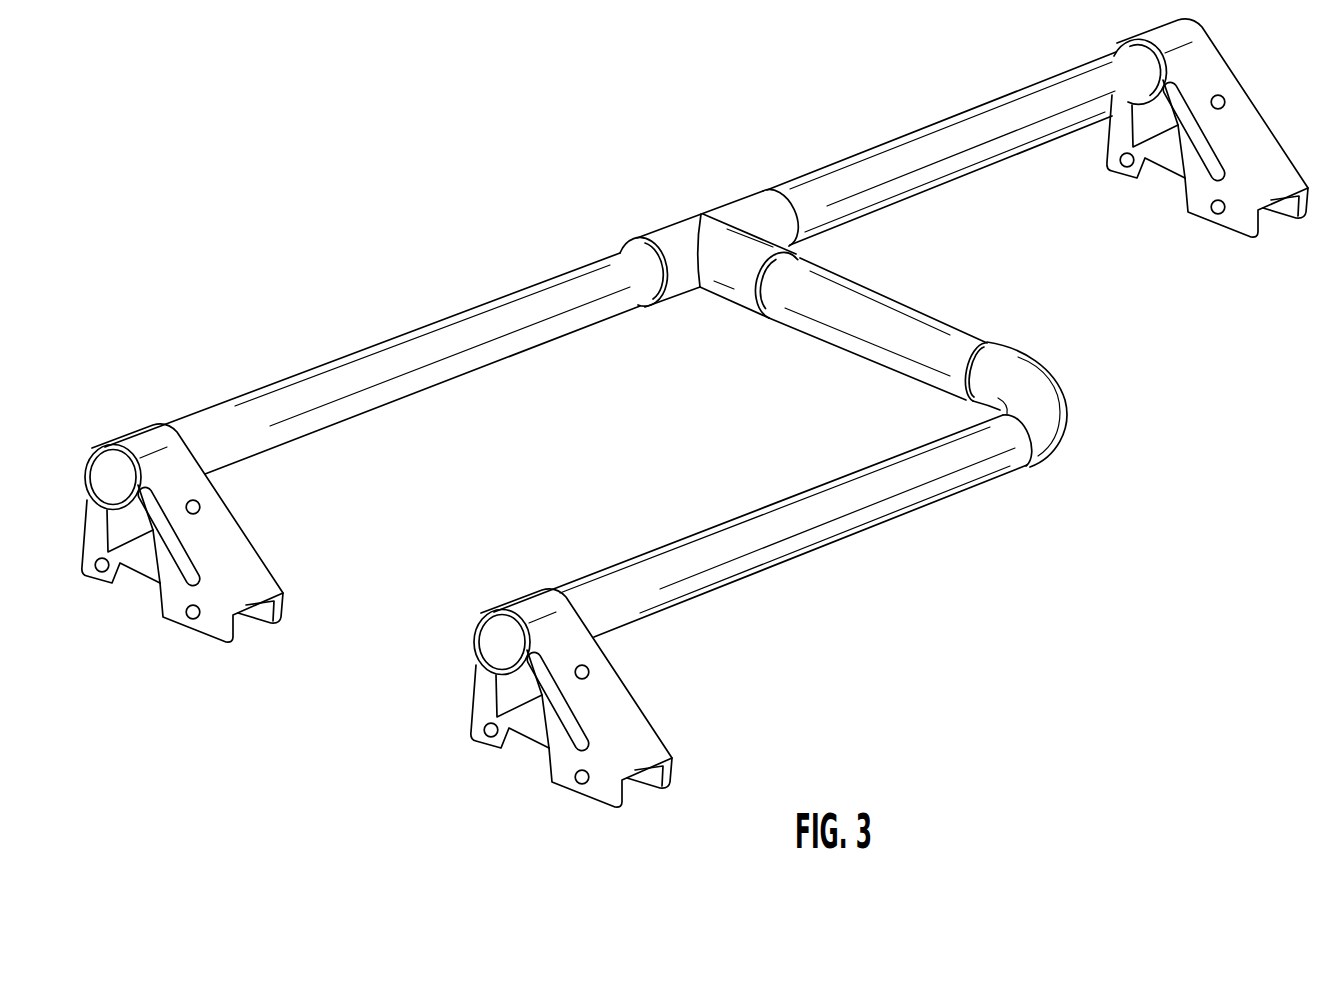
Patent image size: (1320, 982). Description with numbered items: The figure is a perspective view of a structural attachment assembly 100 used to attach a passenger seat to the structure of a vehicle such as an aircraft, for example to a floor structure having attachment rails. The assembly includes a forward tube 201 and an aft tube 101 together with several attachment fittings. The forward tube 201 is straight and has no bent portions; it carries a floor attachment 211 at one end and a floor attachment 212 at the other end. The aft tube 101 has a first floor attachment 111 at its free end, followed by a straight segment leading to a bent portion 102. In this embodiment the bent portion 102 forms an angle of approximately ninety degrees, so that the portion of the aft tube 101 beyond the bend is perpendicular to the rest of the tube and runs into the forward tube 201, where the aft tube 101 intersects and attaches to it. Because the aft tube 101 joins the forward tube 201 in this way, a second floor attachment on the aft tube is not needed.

The structural attachment assembly 100 is at (206, 170).
The aft tube 101 is at (812, 530).
The first bent portion 102 is at (1040, 397).
The first floor attachment 111 is at (565, 772).
The forward tube 201 is at (340, 387).
The floor attachment 211 is at (180, 601).
The floor attachment 212 is at (1250, 140).